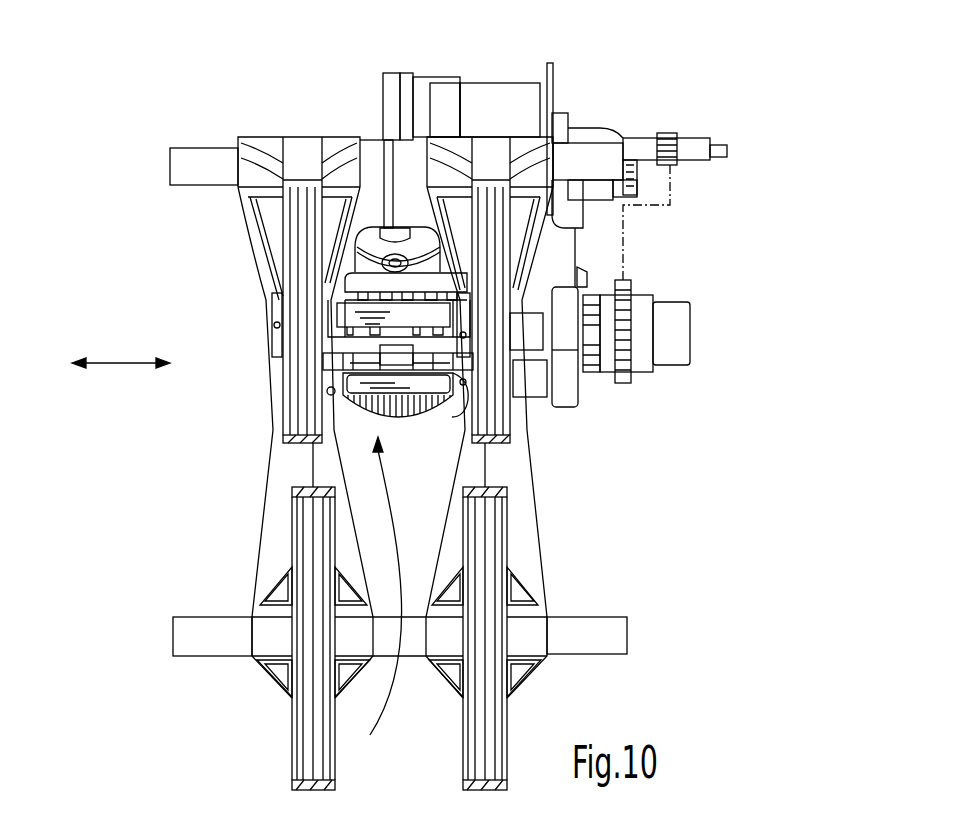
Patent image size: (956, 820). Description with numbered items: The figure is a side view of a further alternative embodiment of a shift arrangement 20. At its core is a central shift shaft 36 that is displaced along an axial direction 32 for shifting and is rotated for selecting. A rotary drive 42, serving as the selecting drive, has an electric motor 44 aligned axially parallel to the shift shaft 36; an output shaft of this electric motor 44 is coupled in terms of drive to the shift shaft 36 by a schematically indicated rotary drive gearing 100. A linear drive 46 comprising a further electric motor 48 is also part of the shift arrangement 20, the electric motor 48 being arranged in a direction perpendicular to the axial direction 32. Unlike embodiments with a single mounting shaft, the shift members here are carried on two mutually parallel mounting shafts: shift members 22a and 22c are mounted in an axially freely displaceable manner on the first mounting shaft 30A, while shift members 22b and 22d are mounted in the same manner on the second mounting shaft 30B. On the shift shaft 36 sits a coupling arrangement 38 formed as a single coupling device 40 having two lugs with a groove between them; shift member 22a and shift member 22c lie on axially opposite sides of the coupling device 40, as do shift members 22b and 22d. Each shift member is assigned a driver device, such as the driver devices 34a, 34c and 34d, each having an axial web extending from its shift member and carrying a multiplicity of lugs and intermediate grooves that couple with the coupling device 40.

The shift arrangement 20 is at (669, 88).
The shift member 22a is at (292, 213).
The shift member 22b is at (273, 568).
The shift member 22c is at (513, 407).
The shift member 22d is at (520, 560).
The first mounting shaft 30A is at (205, 165).
The second mounting shaft 30B is at (193, 642).
The axial direction 32 is at (122, 362).
The driver device 34a is at (350, 313).
The driver device 34c is at (447, 280).
The driver device 34d is at (421, 440).
The shift shaft 36 is at (520, 333).
The coupling arrangement 38 is at (280, 391).
The coupling device 40 is at (362, 344).
The rotary drive 42 is at (581, 99).
The electric motor 44 is at (495, 107).
The linear drive 46 is at (382, 594).
The electric motor 48 is at (371, 135).
The rotary drive gearing 100 is at (671, 200).